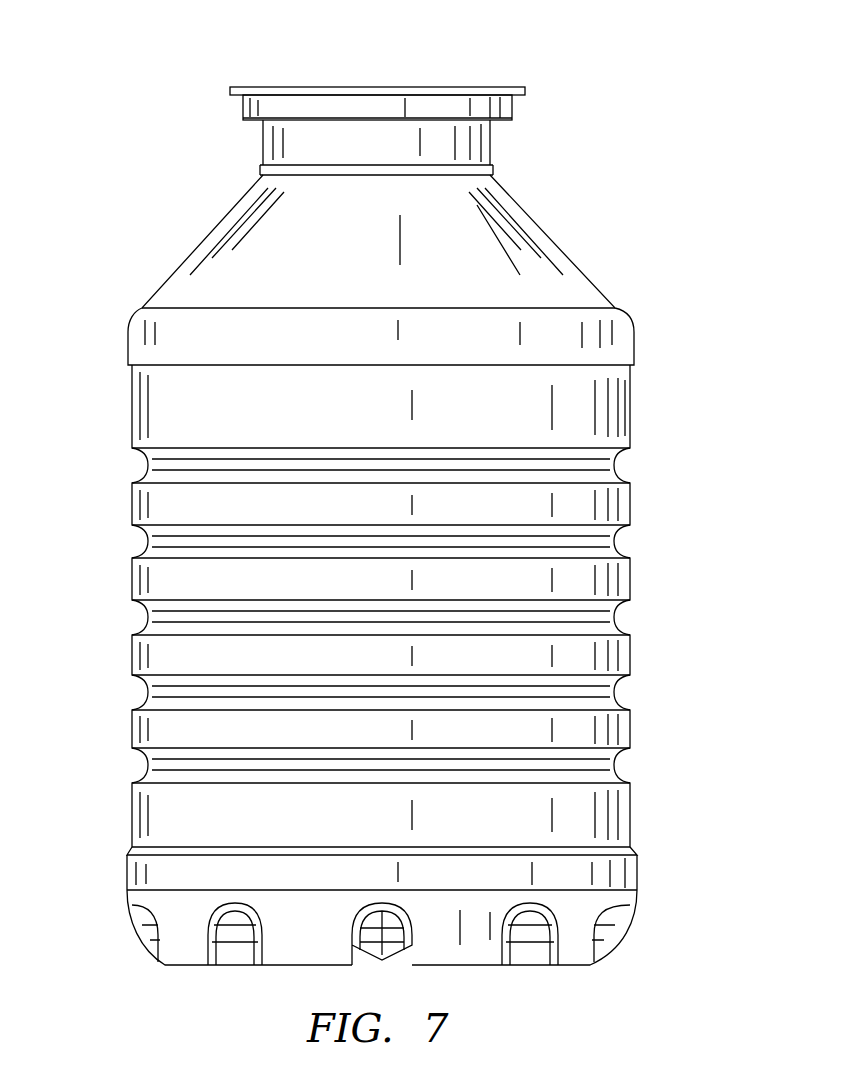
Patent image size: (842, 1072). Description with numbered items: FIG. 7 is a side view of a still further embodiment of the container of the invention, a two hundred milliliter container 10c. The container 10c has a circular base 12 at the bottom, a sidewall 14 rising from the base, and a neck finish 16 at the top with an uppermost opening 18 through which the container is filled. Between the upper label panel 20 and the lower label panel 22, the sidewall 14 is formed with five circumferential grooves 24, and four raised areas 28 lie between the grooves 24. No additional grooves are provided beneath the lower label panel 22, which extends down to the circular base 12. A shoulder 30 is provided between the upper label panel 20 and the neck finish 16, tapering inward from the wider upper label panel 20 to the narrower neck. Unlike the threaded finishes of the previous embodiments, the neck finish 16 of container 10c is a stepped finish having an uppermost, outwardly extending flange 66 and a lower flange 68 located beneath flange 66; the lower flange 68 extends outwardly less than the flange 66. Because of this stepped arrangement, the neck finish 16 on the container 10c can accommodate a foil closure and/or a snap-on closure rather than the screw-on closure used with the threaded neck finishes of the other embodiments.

The container 10c is at (686, 587).
The circular base 12 is at (640, 908).
The sidewall 14 is at (132, 580).
The neck finish 16 is at (513, 110).
The uppermost opening 18 is at (450, 89).
The upper label panel 20 is at (630, 405).
The lower label panel 22 is at (632, 822).
The circumferential grooves 24 is at (147, 770).
The raised areas 28 is at (630, 730).
The shoulder 30 is at (560, 262).
The uppermost outwardly extending flange 66 is at (230, 90).
The lower flange 68 is at (243, 112).